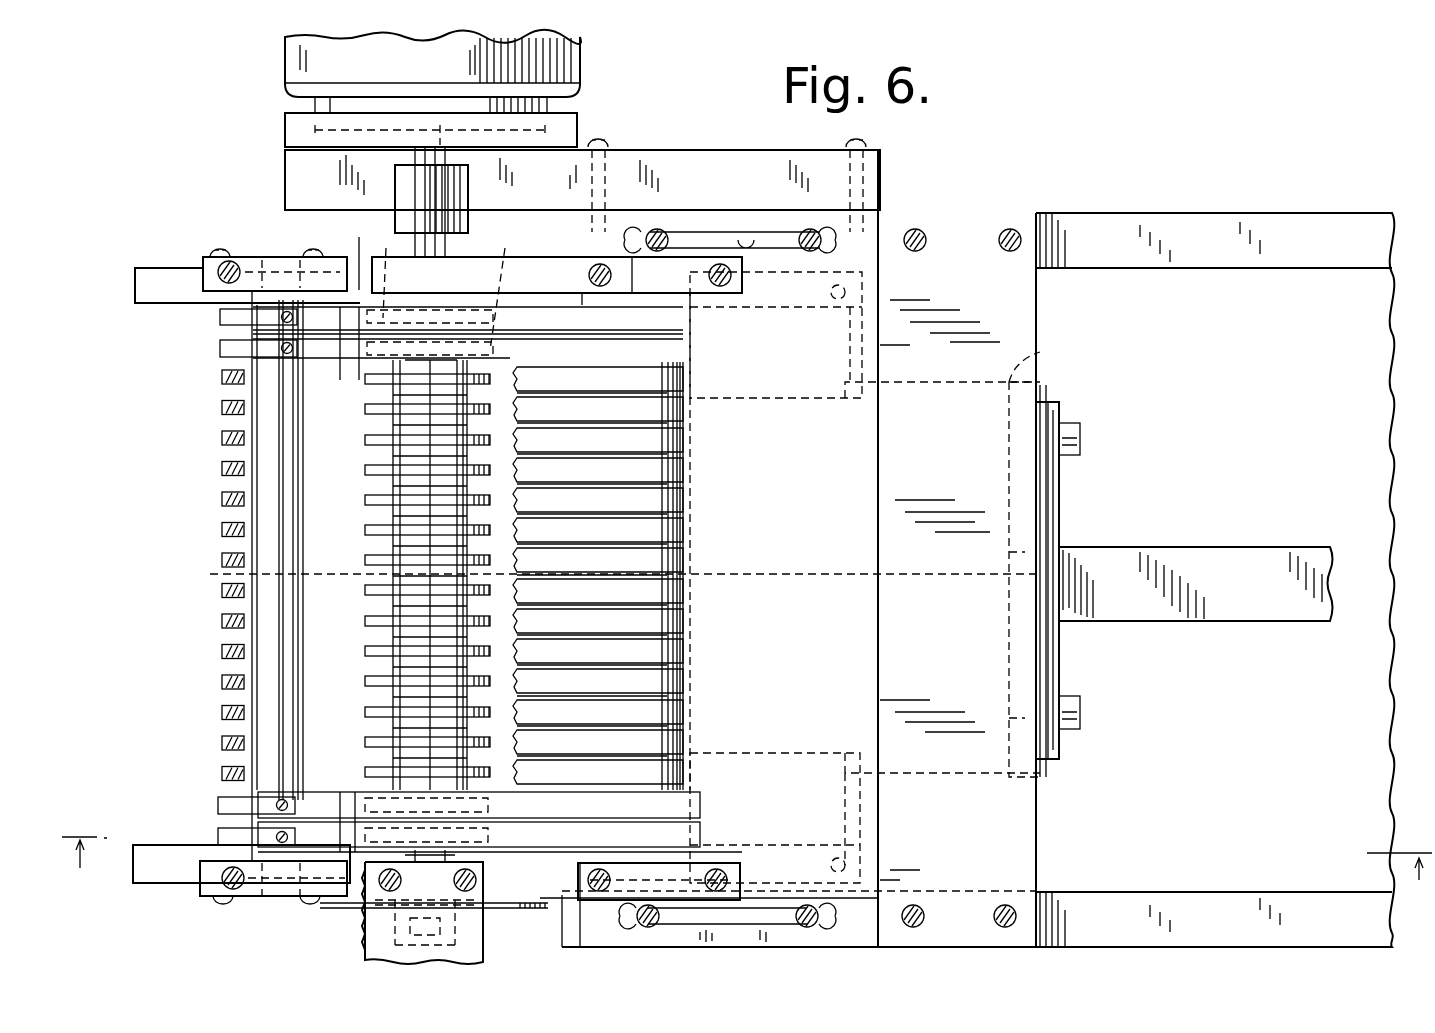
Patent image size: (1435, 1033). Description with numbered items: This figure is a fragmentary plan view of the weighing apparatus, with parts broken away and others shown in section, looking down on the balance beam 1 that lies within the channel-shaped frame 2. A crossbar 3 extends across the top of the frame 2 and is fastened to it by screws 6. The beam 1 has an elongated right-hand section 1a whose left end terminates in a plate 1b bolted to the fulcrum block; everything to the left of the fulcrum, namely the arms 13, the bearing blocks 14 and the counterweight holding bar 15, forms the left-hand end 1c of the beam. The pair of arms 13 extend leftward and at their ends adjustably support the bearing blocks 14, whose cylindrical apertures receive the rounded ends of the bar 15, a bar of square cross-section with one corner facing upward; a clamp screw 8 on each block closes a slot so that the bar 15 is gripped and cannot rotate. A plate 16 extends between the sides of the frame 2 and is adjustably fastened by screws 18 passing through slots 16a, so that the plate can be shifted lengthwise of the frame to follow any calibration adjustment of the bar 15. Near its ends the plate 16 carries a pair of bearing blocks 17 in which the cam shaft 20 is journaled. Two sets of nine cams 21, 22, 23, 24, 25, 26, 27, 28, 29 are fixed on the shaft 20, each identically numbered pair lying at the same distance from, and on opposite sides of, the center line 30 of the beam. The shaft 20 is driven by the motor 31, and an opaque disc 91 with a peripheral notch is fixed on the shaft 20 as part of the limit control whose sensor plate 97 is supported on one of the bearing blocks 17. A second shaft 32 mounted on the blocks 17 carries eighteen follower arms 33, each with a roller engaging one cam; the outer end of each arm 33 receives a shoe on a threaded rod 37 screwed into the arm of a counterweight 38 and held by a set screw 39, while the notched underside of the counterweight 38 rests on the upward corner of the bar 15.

The balance beam 1 is at (746, 868).
The right-hand section 1a is at (1196, 560).
The plate 1b is at (1059, 470).
The left-hand end 1c is at (1040, 358).
The frame 2 is at (1305, 880).
The crossbar 3 is at (1028, 306).
The screws 6 is at (1010, 230).
The clamp screw 8 is at (220, 266).
The arms 13 is at (358, 262).
The bearing blocks 14 is at (250, 257).
The counterweight holding bar 15 is at (252, 392).
The plate 16 is at (878, 236).
The slots 16a is at (745, 233).
The bearing blocks 17 is at (545, 268).
The screws 18 is at (808, 230).
The shaft 20 is at (480, 862).
The cam 21 is at (365, 560).
The cam 22 is at (365, 531).
The cam 23 is at (365, 501).
The cam 24 is at (365, 472).
The cam 25 is at (365, 442).
The cam 26 is at (365, 411).
The cam 27 is at (365, 380).
The cam 28 is at (492, 300).
The cam 29 is at (520, 837).
The center line 30 is at (200, 575).
The motor 31 is at (580, 55).
The shaft 32 is at (662, 548).
The follower arms 33 is at (682, 500).
The threaded rod 37 is at (220, 318).
The counterweight 38 is at (222, 352).
The set screw 39 is at (220, 347).
The opaque disc 91 is at (527, 910).
The plate 97 is at (368, 938).